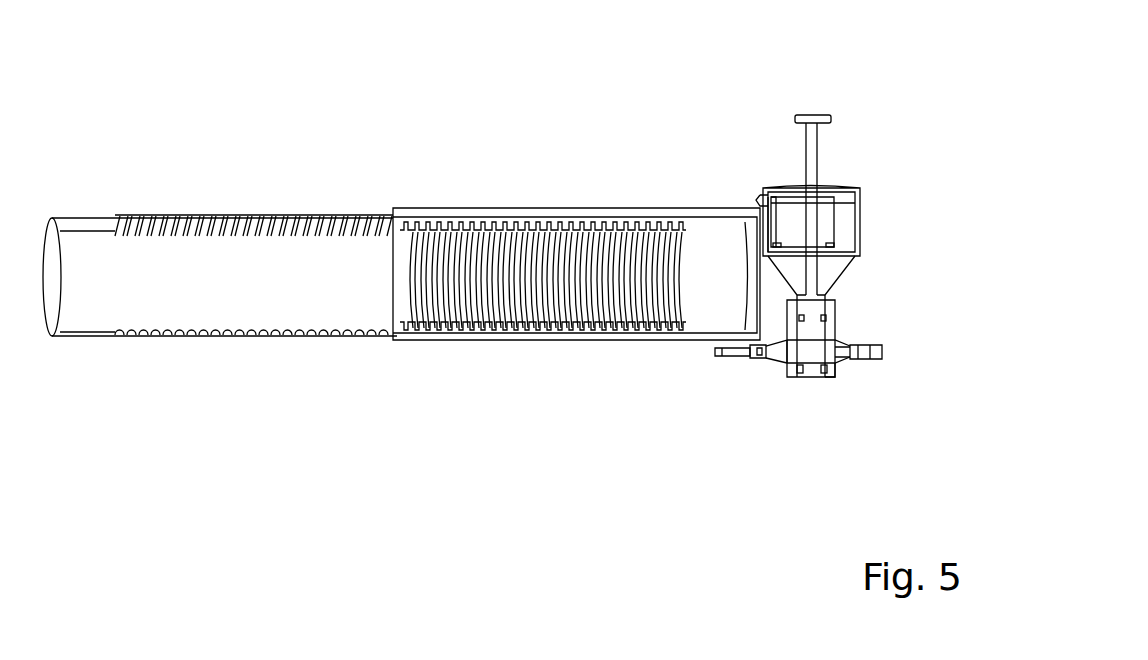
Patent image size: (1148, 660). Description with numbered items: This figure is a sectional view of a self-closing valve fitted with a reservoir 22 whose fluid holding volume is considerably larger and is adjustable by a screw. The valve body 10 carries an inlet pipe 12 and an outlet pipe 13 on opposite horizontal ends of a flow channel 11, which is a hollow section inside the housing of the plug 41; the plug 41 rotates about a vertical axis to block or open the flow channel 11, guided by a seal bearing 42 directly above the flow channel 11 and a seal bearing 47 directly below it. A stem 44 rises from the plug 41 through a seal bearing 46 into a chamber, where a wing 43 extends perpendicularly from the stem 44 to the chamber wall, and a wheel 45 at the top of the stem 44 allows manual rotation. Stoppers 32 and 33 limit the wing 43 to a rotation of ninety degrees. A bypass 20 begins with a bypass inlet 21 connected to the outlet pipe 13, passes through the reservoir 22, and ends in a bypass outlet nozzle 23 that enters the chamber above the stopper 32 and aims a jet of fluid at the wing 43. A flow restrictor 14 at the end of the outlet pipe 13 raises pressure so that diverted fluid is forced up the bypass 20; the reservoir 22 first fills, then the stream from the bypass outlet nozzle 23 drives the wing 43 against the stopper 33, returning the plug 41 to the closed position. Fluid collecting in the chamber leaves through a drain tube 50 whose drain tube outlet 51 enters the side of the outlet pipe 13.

The reservoir 22 is at (283, 250).
The bypass 20 is at (757, 200).
The bypass outlet nozzle 23 is at (768, 197).
The stopper 32 is at (775, 195).
The wheel 45 is at (812, 115).
The stem 44 is at (817, 145).
The wing 43 is at (827, 213).
The stopper 33 is at (836, 243).
The seal bearing 46 is at (855, 254).
The drain tube 50 is at (798, 272).
The valve body 10 is at (836, 308).
The seal bearing 42 is at (826, 318).
The inlet pipe 12 is at (882, 352).
The flow restrictor 14 is at (716, 358).
The outlet pipe 13 is at (744, 360).
The bypass inlet 21 is at (760, 364).
The drain tube outlet 51 is at (767, 365).
The flow channel 11 is at (799, 378).
The plug 41 is at (808, 378).
The seal bearing 47 is at (825, 380).